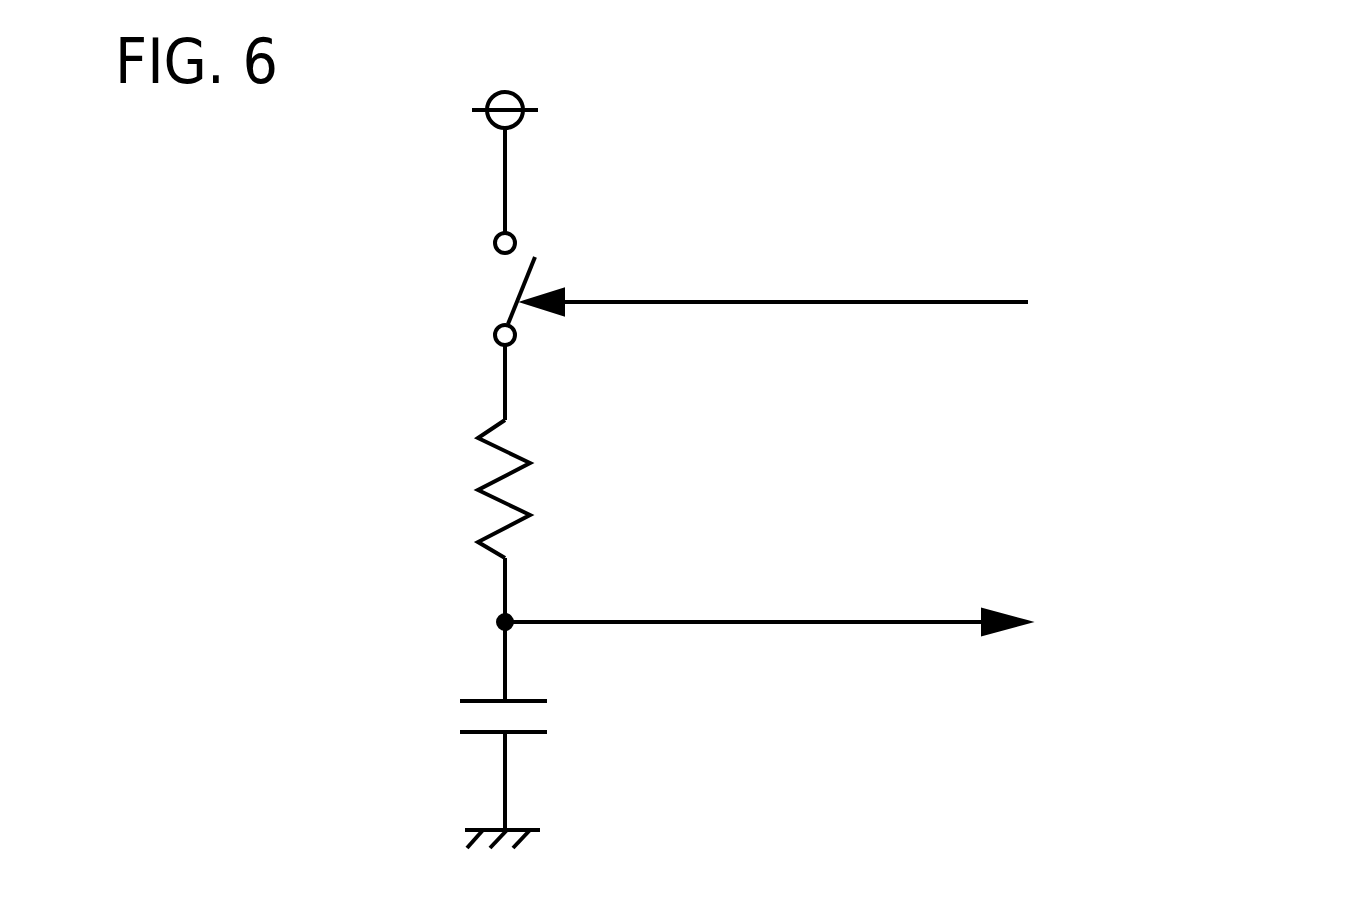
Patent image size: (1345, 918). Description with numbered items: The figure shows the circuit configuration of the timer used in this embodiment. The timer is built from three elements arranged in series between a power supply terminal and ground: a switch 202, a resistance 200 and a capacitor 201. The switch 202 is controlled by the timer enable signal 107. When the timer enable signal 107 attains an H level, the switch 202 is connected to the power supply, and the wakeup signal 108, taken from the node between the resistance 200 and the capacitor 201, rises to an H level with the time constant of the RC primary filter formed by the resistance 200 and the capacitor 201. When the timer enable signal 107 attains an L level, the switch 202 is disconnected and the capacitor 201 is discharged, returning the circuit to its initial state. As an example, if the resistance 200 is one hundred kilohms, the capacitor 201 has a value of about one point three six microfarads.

The switch 202 is at (480, 258).
The resistance 200 is at (457, 493).
The capacitor 201 is at (457, 714).
The timer enable signal 107 is at (760, 304).
The wakeup signal 108 is at (758, 624).